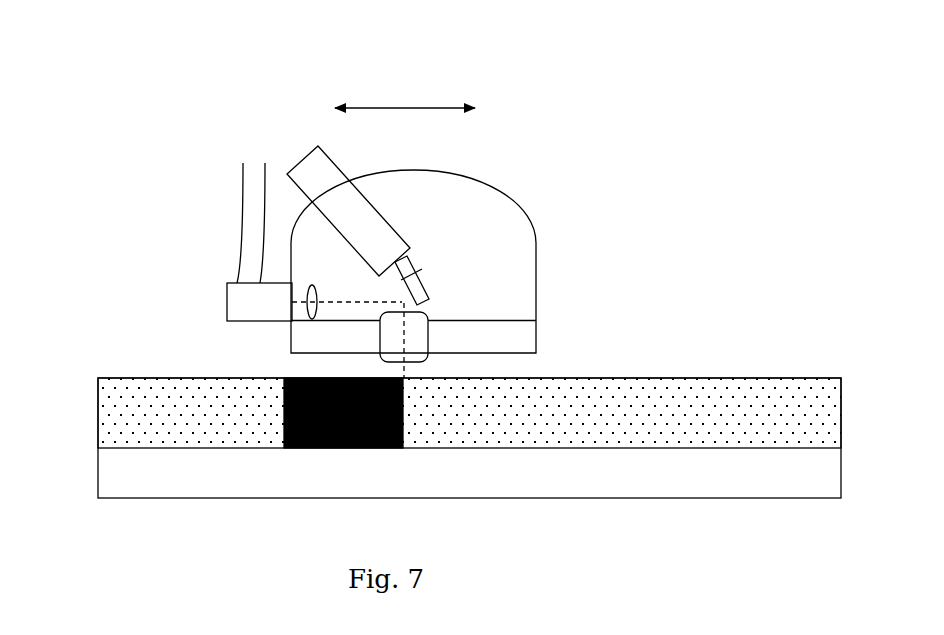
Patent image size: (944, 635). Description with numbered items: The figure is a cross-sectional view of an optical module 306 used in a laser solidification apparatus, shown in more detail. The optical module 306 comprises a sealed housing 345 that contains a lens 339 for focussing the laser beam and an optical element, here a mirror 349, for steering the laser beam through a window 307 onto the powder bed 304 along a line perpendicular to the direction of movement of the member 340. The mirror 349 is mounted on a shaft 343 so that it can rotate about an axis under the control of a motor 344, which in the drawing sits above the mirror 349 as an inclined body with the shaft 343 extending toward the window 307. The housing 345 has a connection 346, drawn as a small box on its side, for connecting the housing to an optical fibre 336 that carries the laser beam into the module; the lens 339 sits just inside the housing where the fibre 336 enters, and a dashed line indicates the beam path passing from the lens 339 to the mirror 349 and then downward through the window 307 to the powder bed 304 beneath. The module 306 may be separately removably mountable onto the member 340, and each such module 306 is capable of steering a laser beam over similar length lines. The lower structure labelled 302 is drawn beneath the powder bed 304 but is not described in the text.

The substrate 302 is at (148, 477).
The powder bed 304 is at (118, 403).
The optical module 306 is at (287, 132).
The window 307 is at (428, 320).
The optical fibre 336 is at (242, 193).
The lens 339 is at (308, 287).
The member 340 is at (503, 347).
The shaft 343 is at (403, 264).
The motor 344 is at (337, 182).
The sealed housing 345 is at (538, 248).
The connection 346 is at (233, 287).
The mirror 349 is at (402, 288).